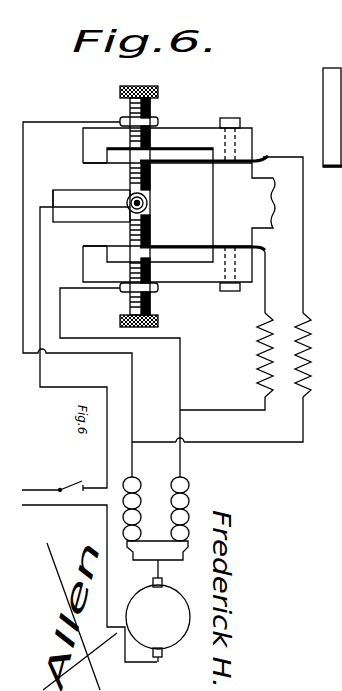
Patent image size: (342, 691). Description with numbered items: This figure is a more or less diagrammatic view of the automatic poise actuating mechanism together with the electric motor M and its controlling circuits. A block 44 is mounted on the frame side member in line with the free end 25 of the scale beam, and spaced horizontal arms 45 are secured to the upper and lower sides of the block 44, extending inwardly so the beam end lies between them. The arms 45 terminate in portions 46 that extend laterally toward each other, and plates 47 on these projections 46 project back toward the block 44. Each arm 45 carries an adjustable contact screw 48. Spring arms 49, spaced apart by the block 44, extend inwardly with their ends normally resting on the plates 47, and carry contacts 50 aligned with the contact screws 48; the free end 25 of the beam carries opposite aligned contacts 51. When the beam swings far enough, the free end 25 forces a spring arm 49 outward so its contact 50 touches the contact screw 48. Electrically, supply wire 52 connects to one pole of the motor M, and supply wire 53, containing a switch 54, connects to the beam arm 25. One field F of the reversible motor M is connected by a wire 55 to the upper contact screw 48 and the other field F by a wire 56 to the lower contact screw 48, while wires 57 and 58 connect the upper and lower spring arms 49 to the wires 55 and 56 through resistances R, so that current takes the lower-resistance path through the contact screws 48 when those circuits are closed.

The free end of the scale beam 25 is at (57, 188).
The block 44 is at (223, 200).
The arms 45 is at (190, 133).
The portions 46 is at (87, 150).
The plates 47 is at (98, 170).
The contact screw 48 is at (153, 105).
The spring arms 49 is at (170, 163).
The contacts 50 is at (130, 168).
The contacts 51 is at (150, 217).
The supply wire 52 is at (30, 505).
The supply wire 53 is at (30, 488).
The switch 54 is at (75, 487).
The wire 55 is at (68, 122).
The wire 56 is at (60, 307).
The wire 57 is at (280, 157).
The wire 58 is at (267, 260).
The resistance R is at (270, 344).
The fields F is at (177, 531).
The motor M is at (158, 623).